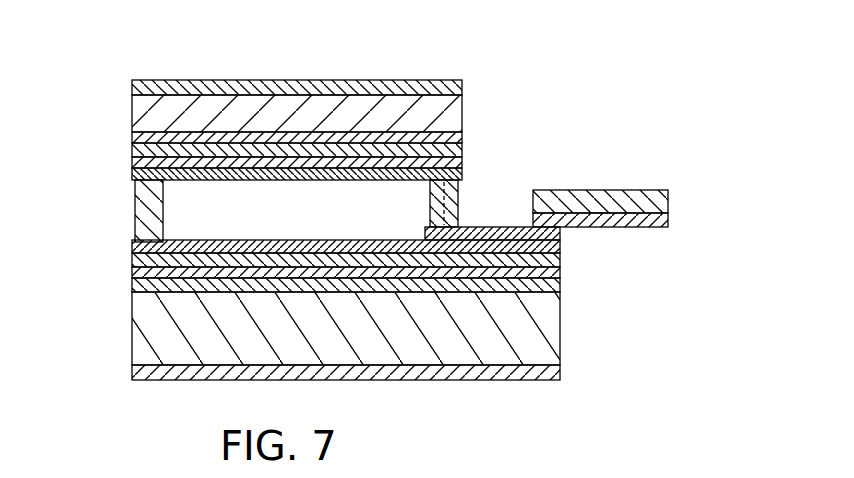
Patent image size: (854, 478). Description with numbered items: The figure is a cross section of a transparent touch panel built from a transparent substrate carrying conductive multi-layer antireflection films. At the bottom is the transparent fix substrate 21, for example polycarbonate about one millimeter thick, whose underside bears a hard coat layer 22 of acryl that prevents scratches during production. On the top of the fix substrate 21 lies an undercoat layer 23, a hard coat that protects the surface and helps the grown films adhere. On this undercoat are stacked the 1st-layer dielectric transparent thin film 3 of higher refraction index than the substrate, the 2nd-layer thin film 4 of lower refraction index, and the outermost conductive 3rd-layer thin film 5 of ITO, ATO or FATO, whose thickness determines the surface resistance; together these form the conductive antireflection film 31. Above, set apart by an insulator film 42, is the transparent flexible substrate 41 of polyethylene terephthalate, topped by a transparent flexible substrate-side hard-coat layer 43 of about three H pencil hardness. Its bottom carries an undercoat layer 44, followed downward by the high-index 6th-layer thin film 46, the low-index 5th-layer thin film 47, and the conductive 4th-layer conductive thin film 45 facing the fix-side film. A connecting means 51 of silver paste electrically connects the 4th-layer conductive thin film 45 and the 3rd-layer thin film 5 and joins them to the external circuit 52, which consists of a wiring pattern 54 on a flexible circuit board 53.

The 1st-layer dielectric transparent thin film 3 is at (560, 272).
The 2nd-layer thin film 4 is at (560, 262).
The 3rd-layer thin film 5 is at (560, 247).
The transparent fix substrate 21 is at (560, 352).
The hard coat layer 22 is at (493, 380).
The undercoat layer 23 is at (560, 285).
The conductive antireflection film 31 is at (423, 290).
The transparent flexible substrate 41 is at (132, 100).
The insulator film 42 is at (135, 220).
The transparent flexible substrate-side hard-coat layer 43 is at (295, 78).
The undercoat layer 44 is at (132, 131).
The 4th-layer conductive thin film 45 is at (132, 177).
The 6th-layer thin film 46 is at (132, 145).
The 5th-layer thin film 47 is at (132, 160).
The connecting means 51 is at (472, 223).
The external circuit 52 is at (643, 195).
The flexible circuit board 53 is at (622, 189).
The wiring pattern 54 is at (618, 232).